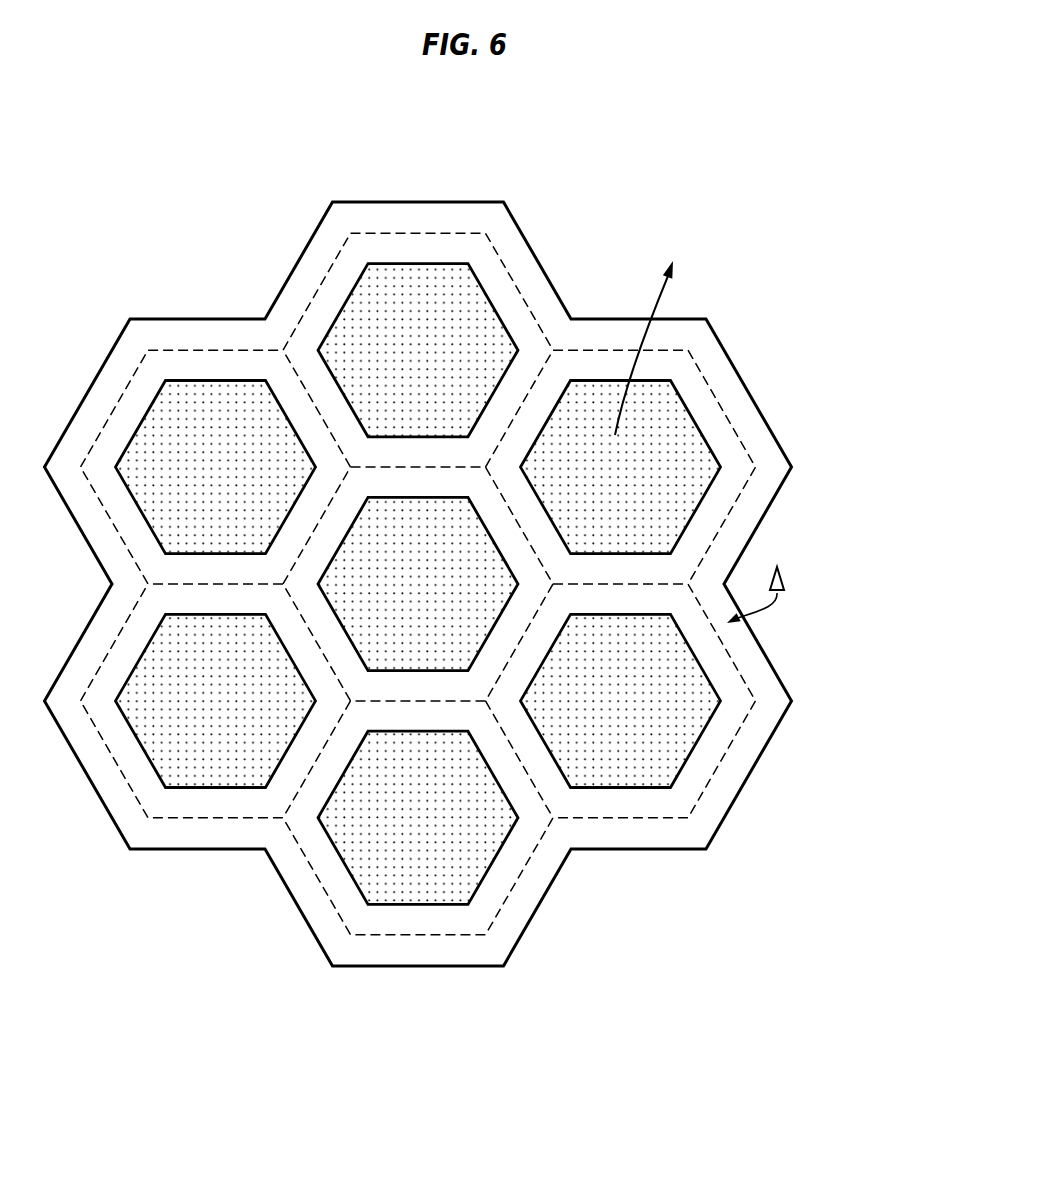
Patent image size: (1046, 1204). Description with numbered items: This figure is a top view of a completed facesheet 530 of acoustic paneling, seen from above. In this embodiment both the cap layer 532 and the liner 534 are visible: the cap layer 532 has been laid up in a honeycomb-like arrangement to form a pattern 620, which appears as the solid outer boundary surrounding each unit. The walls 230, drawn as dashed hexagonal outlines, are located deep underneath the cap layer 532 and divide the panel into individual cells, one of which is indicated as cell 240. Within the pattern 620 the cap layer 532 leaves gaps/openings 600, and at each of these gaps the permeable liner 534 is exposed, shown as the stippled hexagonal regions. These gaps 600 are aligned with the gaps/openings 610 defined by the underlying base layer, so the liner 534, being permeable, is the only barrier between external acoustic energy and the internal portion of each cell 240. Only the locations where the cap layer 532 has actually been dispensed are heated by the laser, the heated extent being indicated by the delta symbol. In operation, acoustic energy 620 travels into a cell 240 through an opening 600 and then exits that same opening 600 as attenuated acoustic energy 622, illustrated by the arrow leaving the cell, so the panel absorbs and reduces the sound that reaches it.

The facesheet 530 is at (503, 598).
The cap layer 532 is at (713, 368).
The walls 230 is at (514, 268).
The liner 534 is at (465, 295).
The gaps/openings defined by base layer 610 is at (397, 283).
The pattern / acoustic energy 620 is at (442, 712).
The attenuated acoustic energy 622 is at (670, 303).
The gaps/openings 600 is at (481, 710).
The cell 240 is at (511, 683).